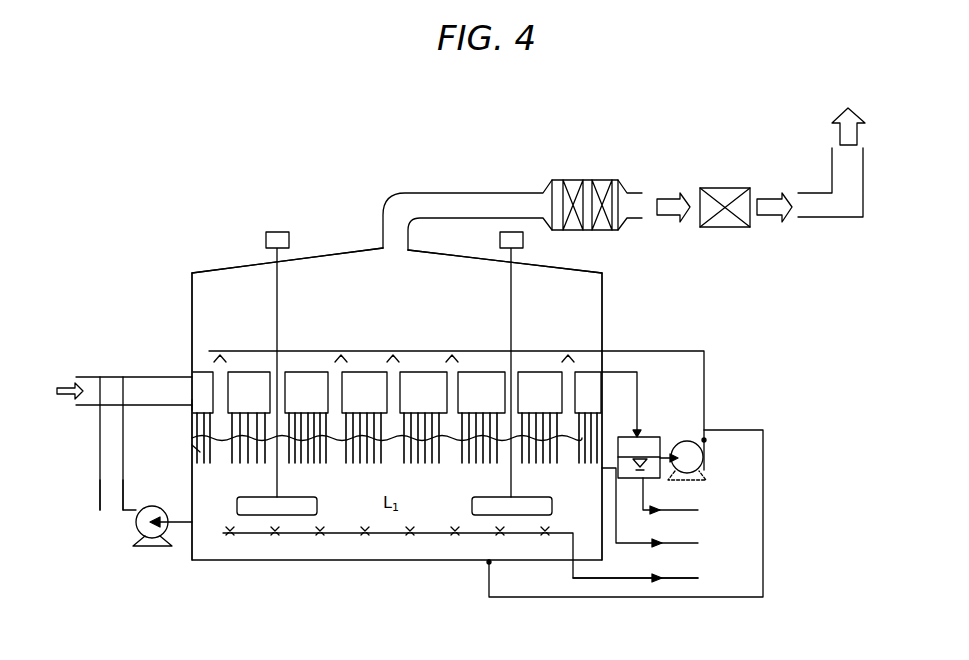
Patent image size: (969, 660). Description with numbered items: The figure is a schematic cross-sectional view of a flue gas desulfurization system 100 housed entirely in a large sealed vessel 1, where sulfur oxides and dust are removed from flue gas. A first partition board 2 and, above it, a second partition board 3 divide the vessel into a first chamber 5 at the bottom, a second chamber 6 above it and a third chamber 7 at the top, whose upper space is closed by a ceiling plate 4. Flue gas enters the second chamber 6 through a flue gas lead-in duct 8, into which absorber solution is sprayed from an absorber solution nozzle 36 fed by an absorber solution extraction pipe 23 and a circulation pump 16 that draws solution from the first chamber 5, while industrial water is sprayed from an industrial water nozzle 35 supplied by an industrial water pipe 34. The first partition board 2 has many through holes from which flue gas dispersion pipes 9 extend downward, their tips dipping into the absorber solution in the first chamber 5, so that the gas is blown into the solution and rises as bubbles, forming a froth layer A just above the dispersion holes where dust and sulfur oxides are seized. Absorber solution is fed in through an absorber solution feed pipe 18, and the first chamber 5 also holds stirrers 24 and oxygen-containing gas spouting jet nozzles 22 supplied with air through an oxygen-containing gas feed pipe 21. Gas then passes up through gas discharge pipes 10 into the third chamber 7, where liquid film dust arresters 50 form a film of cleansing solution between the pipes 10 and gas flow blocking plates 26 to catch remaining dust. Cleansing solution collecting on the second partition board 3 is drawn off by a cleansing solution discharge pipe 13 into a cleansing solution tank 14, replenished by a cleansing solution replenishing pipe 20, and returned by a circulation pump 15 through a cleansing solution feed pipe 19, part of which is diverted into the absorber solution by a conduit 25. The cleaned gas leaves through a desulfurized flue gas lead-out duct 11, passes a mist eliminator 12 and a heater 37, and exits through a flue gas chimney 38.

The flue gas desulfurization system 100 is at (197, 261).
The sealed vessel 1 is at (190, 272).
The ceiling plate 4 is at (333, 253).
The third chamber 7 is at (590, 307).
The flue gas lead-in duct 8 is at (158, 375).
The industrial water nozzle 35 is at (103, 388).
The absorber solution nozzle 36 is at (128, 390).
The industrial water pipe 34 is at (95, 498).
The absorber solution extraction pipe 23 is at (128, 512).
The circulation pump 16 is at (162, 547).
The second partition board 3 is at (197, 367).
The second chamber 6 is at (187, 407).
The gas flow blocking plate 26 is at (352, 351).
The gas discharge pipe 10 is at (398, 388).
The flue gas dispersion pipe 9 is at (328, 463).
The first partition board 2 is at (191, 448).
The froth layer A is at (188, 452).
The liquid film dust arrester 50 is at (322, 352).
The stirrer 24 is at (294, 509).
The first chamber 5 is at (565, 463).
The oxygen-containing gas spouting jet nozzle 22 is at (373, 533).
The oxygen-containing gas feed pipe 21 is at (698, 578).
The conduit 25 is at (763, 545).
The cleansing solution discharge pipe 13 is at (618, 371).
The cleansing solution feed pipe 19 is at (704, 362).
The cleansing solution tank 14 is at (630, 435).
The circulation pump 15 is at (704, 470).
The cleansing solution replenishing pipe 20 is at (698, 510).
The absorber solution feed pipe 18 is at (698, 543).
The desulfurized flue gas lead-out duct 11 is at (493, 193).
The mist eliminator 12 is at (595, 180).
The heater 37 is at (733, 188).
The flue gas chimney 38 is at (835, 217).